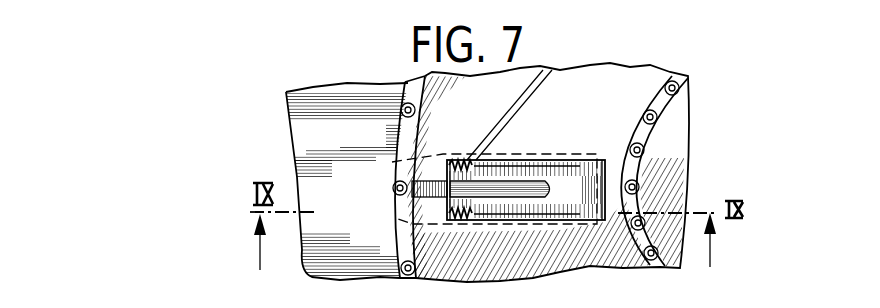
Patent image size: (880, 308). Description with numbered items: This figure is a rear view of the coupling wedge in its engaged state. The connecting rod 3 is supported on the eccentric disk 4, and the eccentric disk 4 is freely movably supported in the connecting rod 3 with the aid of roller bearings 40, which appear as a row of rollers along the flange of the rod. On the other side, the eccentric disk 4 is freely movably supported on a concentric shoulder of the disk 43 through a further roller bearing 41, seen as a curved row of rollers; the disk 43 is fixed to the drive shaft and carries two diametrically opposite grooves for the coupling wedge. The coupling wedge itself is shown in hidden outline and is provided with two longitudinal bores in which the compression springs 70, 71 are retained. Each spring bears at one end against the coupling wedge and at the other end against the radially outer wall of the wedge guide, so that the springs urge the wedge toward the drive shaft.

The connecting rod 3 is at (306, 148).
The eccentric disk 4 is at (638, 89).
The roller bearings 40 is at (400, 262).
The roller bearing 41 is at (665, 123).
The disk 43 is at (664, 158).
The compression spring 70 is at (460, 158).
The compression spring 71 is at (456, 224).